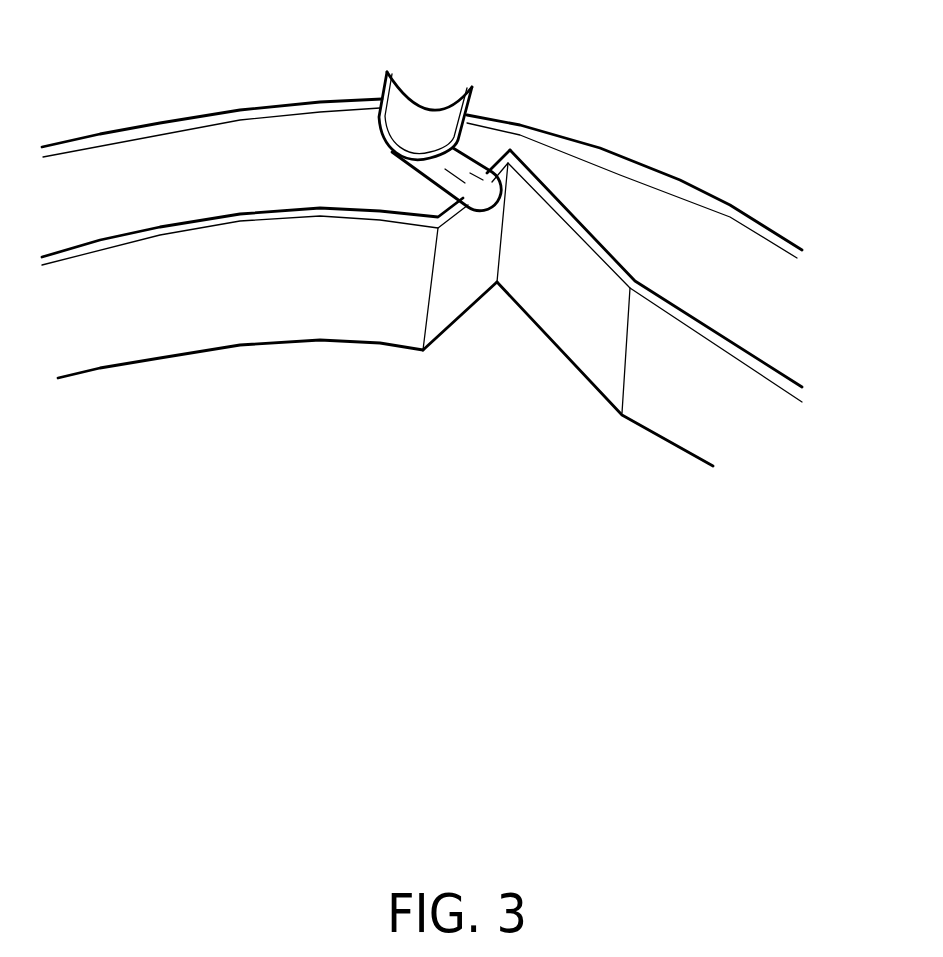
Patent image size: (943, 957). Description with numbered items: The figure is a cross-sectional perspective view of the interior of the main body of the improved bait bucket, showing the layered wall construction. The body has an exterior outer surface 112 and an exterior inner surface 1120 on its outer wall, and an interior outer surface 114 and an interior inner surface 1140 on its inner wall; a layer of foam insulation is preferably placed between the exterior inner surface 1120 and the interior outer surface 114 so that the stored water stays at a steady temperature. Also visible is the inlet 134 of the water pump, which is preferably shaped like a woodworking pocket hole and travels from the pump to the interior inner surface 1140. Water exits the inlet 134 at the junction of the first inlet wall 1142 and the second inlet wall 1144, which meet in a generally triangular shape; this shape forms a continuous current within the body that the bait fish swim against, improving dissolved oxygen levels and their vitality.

The exterior outer surface 112 is at (674, 152).
The interior outer surface 114 is at (333, 192).
The inlet 134 is at (437, 135).
The exterior inner surface 1120 is at (220, 180).
The interior inner surface 1140 is at (298, 292).
The first inlet wall 1142 is at (595, 303).
The second inlet wall 1144 is at (497, 268).